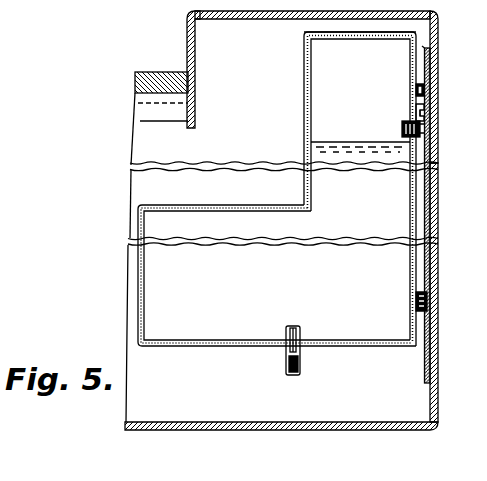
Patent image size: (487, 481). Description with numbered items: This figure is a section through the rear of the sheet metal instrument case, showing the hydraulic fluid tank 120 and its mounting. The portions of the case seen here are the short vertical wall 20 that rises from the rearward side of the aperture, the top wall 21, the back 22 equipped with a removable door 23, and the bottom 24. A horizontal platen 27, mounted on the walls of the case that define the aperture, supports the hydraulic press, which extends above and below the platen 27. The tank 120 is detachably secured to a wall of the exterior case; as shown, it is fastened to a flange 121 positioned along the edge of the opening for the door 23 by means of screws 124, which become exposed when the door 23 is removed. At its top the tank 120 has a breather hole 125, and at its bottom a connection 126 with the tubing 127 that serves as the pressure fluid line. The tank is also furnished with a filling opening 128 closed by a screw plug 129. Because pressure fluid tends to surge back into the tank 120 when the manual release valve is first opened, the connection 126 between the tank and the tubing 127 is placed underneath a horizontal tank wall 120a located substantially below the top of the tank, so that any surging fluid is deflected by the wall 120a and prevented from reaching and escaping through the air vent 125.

The short vertical wall 20 is at (187, 42).
The top wall 21 is at (407, 13).
The back 22 is at (440, 31).
The removable door 23 is at (440, 184).
The bottom 24 is at (237, 428).
The horizontal platen 27 is at (135, 85).
The tank 120 is at (300, 88).
The horizontal tank wall 120a is at (272, 207).
The flange 121 is at (435, 50).
The screws 124 is at (434, 99).
The breather hole 125 is at (375, 33).
The connection 126 is at (285, 344).
The tubing 127 is at (299, 370).
The filling opening 128 is at (412, 121).
The screw plug 129 is at (435, 121).